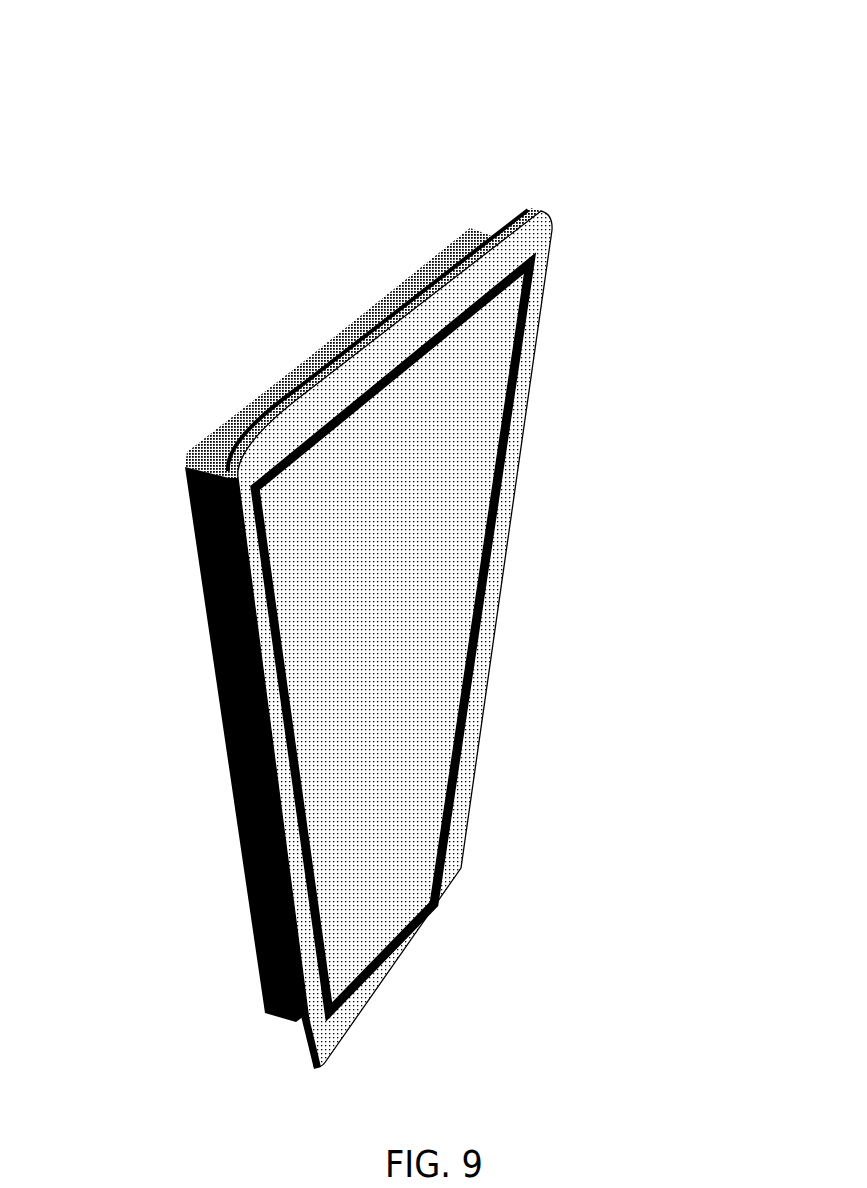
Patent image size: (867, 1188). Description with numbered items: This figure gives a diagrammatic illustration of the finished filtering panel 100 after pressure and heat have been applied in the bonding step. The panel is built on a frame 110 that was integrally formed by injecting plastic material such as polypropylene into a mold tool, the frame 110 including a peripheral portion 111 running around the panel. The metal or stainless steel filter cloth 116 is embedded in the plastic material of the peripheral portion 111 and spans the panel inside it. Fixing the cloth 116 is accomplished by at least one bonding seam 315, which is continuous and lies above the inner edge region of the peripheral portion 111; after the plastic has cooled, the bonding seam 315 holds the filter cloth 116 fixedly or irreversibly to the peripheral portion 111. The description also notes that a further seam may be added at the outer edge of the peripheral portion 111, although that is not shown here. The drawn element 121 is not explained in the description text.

The filtering panel 100 is at (329, 252).
The frame 110 is at (303, 362).
The peripheral portion 111 is at (528, 207).
The side wall 121 is at (246, 420).
The bonding seam 315 is at (533, 335).
The filter cloth 116 is at (468, 458).